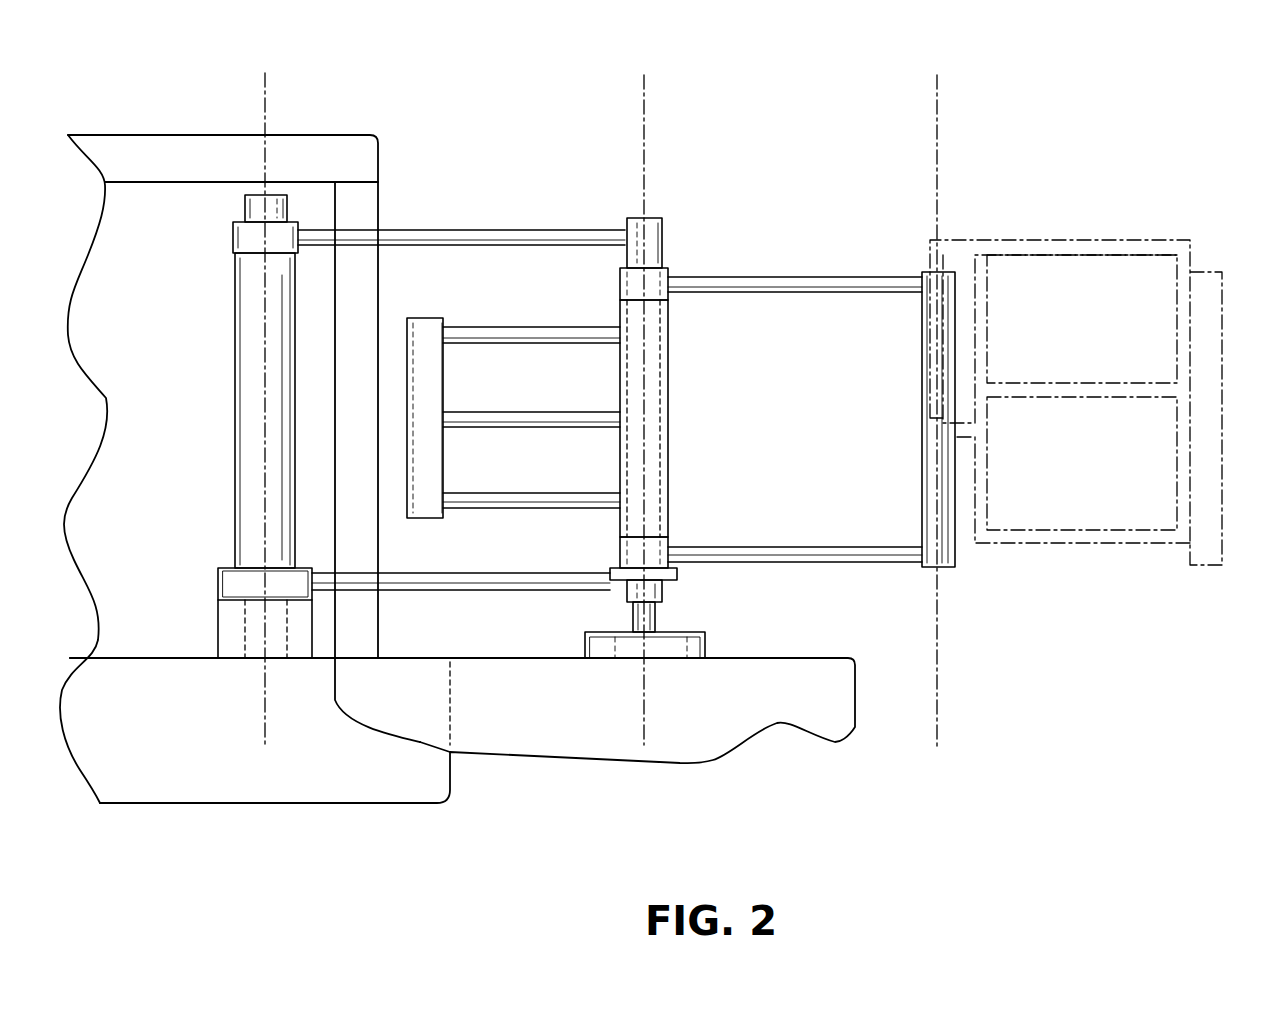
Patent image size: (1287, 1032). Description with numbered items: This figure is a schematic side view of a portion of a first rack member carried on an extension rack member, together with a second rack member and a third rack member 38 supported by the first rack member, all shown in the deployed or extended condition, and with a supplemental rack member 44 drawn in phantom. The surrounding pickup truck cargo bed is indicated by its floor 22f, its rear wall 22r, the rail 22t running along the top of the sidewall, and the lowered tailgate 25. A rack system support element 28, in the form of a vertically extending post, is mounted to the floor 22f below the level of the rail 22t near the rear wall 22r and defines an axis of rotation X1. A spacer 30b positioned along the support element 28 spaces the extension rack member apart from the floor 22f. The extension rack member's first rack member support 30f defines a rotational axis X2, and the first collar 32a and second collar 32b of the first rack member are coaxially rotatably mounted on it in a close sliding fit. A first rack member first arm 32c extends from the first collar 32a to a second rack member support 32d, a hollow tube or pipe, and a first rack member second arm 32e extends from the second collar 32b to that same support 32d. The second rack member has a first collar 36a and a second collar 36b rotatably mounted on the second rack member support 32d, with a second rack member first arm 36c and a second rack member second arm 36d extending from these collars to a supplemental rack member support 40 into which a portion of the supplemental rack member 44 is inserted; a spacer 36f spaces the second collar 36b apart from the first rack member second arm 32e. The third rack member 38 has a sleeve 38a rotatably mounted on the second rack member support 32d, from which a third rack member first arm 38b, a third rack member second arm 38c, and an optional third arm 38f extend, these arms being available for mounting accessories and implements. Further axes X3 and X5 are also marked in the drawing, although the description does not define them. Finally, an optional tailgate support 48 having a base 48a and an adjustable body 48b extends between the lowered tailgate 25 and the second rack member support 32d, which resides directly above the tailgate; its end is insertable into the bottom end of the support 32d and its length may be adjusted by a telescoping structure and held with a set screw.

The rail 22t is at (247, 150).
The rear wall 22r is at (363, 205).
The floor 22f is at (172, 658).
The tailgate 25 is at (507, 658).
The rack system support element 28 is at (253, 208).
The first rack member support 30f is at (250, 317).
The spacer 30b is at (297, 643).
The first collar 32a is at (248, 237).
The second collar 32b is at (237, 590).
The first rack member first arm 32c is at (452, 240).
The second rack member support 32d is at (627, 227).
The first rack member second arm 32e is at (547, 588).
The first collar 36a is at (622, 287).
The second collar 36b is at (622, 553).
The second rack member first arm 36c is at (818, 282).
The second rack member second arm 36d is at (838, 555).
The spacer 36f is at (677, 574).
The third rack member 38 is at (672, 373).
The sleeve 38a is at (657, 477).
The third rack member first arm 38b is at (577, 338).
The third rack member second arm 38c is at (495, 505).
The third arm 38f is at (575, 422).
The supplemental rack member support 40 is at (947, 568).
The supplemental rack member 44 is at (1222, 270).
The tailgate support 48 is at (587, 725).
The base 48a is at (625, 653).
The adjustable body 48b is at (633, 620).
The axis of rotation X1 is at (319, 395).
The rotational axis X2 is at (267, 117).
The axis X3 is at (647, 157).
The axis X5 is at (943, 682).